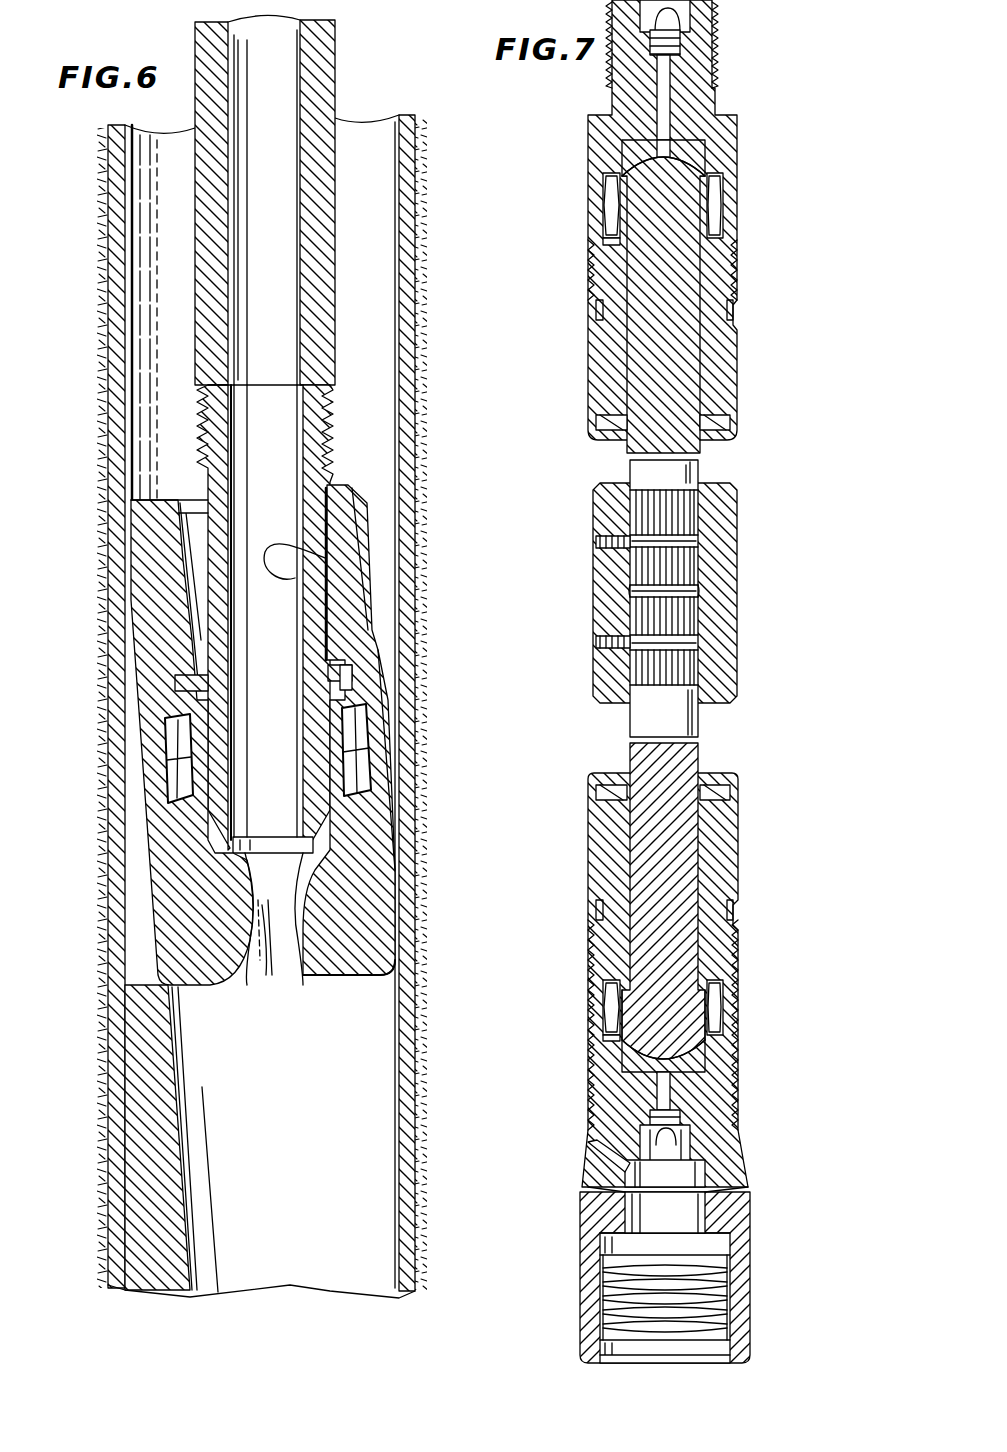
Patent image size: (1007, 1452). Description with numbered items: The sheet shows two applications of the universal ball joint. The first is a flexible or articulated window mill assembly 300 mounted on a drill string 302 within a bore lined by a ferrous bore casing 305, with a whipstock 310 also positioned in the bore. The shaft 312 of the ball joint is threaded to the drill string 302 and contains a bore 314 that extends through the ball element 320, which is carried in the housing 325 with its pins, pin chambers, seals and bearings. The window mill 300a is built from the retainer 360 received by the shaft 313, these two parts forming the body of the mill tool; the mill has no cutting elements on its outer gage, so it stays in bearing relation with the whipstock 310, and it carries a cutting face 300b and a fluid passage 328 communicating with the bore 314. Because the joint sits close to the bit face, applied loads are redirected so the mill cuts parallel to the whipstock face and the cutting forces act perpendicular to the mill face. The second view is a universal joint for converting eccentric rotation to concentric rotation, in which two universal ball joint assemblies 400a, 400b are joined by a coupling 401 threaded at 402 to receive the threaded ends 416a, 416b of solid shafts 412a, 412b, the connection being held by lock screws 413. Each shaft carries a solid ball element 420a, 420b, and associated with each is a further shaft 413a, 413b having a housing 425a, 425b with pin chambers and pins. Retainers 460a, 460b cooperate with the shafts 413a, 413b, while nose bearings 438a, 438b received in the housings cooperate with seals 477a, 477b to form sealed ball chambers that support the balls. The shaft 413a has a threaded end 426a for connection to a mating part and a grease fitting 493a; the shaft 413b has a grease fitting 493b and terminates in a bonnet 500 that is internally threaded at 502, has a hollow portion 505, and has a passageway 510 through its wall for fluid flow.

In FIG. 6, the window mill assembly 300 is at (368, 619).
In FIG. 6, the window mill 300a is at (372, 837).
In FIG. 6, the cutting face 300b is at (395, 990).
In FIG. 6, the drill string 302 is at (310, 205).
In FIG. 6, the bore casing 305 is at (412, 383).
In FIG. 6, the whipstock 310 is at (160, 1059).
In FIG. 6, the shaft 312 is at (332, 602).
In FIG. 6, the shaft 313 is at (352, 690).
In FIG. 6, the bore 314 is at (345, 585).
In FIG. 6, the ball element 320 is at (340, 724).
In FIG. 6, the housing 325 is at (165, 758).
In FIG. 6, the fluid passage 328 is at (252, 985).
In FIG. 6, the retainer 360 is at (330, 560).
In FIG. 7, the universal ball joint assembly 400a is at (762, 314).
In FIG. 7, the universal ball joint assembly 400b is at (770, 894).
In FIG. 7, the coupling 401 is at (720, 615).
In FIG. 7, the threads 402 is at (705, 560).
In FIG. 7, the shaft 412a is at (690, 479).
In FIG. 7, the shaft 412b is at (692, 713).
In FIG. 7, the set screw 413 is at (600, 545).
In FIG. 7, the shaft 413a is at (738, 225).
In FIG. 7, the shaft 413b is at (735, 938).
In FIG. 7, the threaded end 416a is at (690, 519).
In FIG. 7, the threaded end 416b is at (690, 663).
In FIG. 7, the ball element 420a is at (700, 179).
In FIG. 7, the ball element 420b is at (715, 1003).
In FIG. 7, the housing 425a is at (603, 235).
In FIG. 7, the housing 425b is at (603, 1033).
In FIG. 7, the threaded end 426a is at (720, 51).
In FIG. 7, the nose bearing 438a is at (717, 140).
In FIG. 7, the nose bearing 438b is at (705, 1062).
In FIG. 7, the retainer 460a is at (735, 373).
In FIG. 7, the retainer 460b is at (725, 835).
In FIG. 7, the seal 477a is at (736, 403).
In FIG. 7, the seal 477b is at (733, 780).
In FIG. 7, the grease fitting 493a is at (682, 8).
In FIG. 7, the grease fitting 493b is at (705, 1162).
In FIG. 7, the bonnet 500 is at (580, 1258).
In FIG. 7, the internal threads 502 is at (610, 1302).
In FIG. 7, the hollow portion 505 is at (685, 1210).
In FIG. 7, the passageway 510 is at (600, 1167).